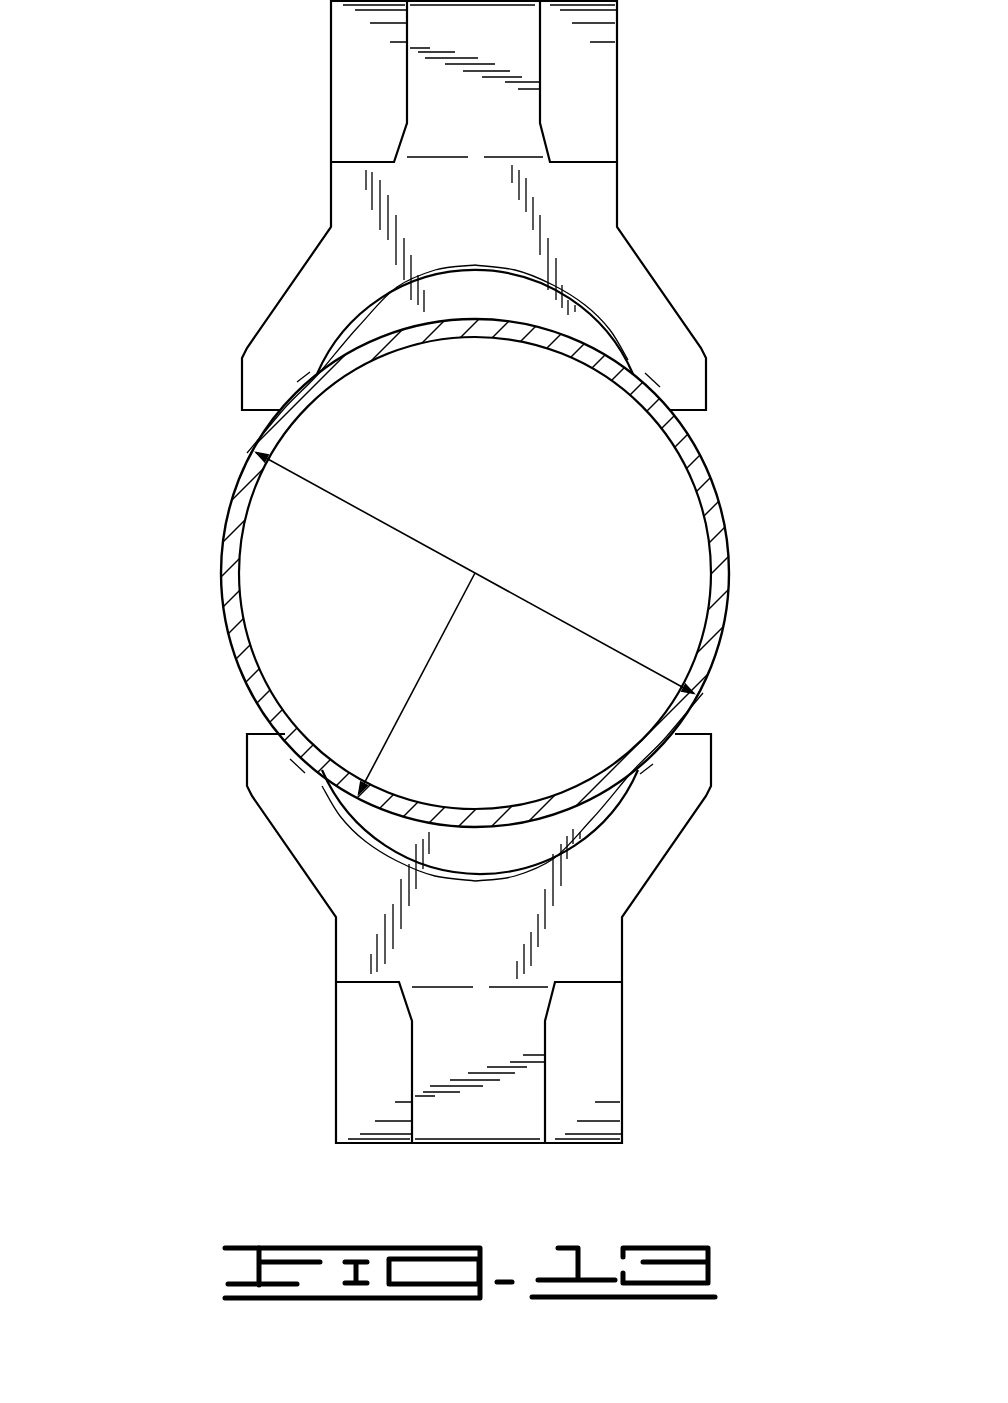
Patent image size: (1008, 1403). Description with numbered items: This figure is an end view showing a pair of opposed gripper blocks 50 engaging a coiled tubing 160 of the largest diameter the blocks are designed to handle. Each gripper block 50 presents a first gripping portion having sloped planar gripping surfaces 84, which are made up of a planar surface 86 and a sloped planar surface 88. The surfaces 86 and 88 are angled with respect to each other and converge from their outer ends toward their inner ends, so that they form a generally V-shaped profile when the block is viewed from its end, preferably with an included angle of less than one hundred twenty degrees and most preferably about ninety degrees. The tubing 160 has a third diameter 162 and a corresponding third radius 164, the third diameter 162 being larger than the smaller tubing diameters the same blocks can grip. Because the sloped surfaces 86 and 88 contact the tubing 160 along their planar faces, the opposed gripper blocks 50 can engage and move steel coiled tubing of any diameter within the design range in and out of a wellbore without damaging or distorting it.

The gripper block 50 is at (582, 210).
The sloped planar gripping surfaces 84 is at (457, 583).
The planar surface 86 is at (242, 883).
The sloped planar surface 88 is at (482, 573).
The tubing 160 is at (717, 497).
The third diameter 162 is at (645, 665).
The third radius 164 is at (393, 730).